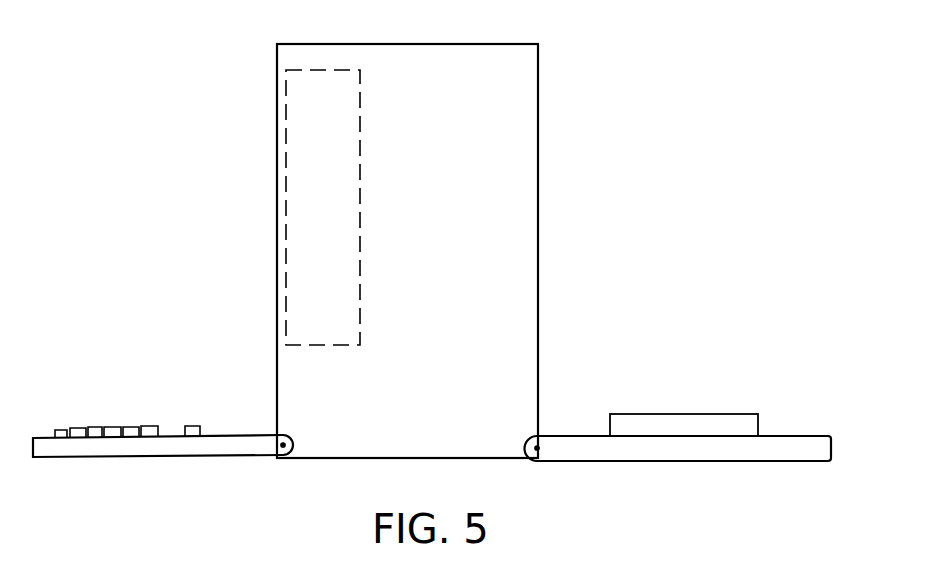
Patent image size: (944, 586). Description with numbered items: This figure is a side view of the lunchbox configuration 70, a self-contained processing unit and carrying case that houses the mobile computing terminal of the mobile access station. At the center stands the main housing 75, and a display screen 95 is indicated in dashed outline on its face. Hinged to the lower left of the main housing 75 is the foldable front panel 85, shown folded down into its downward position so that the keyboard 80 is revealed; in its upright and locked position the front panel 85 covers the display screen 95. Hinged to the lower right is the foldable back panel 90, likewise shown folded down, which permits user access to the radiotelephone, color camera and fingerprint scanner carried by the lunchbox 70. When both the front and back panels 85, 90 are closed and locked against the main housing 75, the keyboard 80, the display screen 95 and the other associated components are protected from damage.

The lunchbox configuration 70 is at (258, 103).
The main housing 75 is at (539, 92).
The keyboard 80 is at (103, 423).
The foldable front panel 85 is at (140, 446).
The foldable back panel 90 is at (710, 461).
The display screen 95 is at (307, 223).